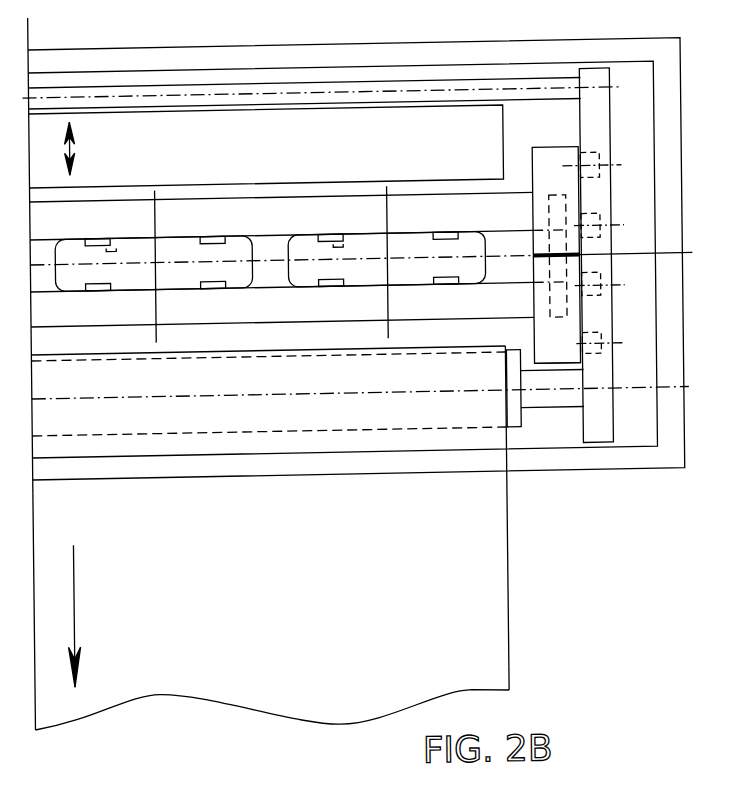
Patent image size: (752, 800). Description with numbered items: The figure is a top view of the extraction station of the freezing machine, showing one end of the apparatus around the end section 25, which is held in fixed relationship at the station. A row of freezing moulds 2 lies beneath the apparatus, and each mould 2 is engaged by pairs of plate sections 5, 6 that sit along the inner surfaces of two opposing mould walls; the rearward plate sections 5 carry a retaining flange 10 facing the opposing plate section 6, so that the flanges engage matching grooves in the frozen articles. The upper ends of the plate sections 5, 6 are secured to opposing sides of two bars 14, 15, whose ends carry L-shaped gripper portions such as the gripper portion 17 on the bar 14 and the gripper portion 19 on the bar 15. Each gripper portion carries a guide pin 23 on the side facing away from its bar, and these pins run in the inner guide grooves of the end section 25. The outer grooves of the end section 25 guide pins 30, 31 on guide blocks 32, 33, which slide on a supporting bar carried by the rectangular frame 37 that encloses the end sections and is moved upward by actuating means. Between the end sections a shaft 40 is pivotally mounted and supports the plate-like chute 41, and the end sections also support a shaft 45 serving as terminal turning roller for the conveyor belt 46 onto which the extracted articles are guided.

The freezing mould 2 is at (156, 277).
The plate section 5 is at (93, 241).
The plate section 6 is at (87, 295).
The retaining flange 10 is at (112, 252).
The bar 14 is at (236, 220).
The bar 15 is at (274, 310).
The gripper portion 17 is at (555, 220).
The gripper portion 19 is at (554, 317).
The guide pin 23 is at (598, 233).
The end section 25 is at (596, 431).
The guide pin 30 is at (599, 167).
The guide pin 31 is at (597, 345).
The guide block 32 is at (556, 163).
The guide block 33 is at (559, 362).
The rectangular frame 37 is at (225, 467).
The shaft 40 is at (267, 97).
The chute 41 is at (384, 132).
The shaft 45 is at (553, 405).
The conveyor belt 46 is at (487, 557).